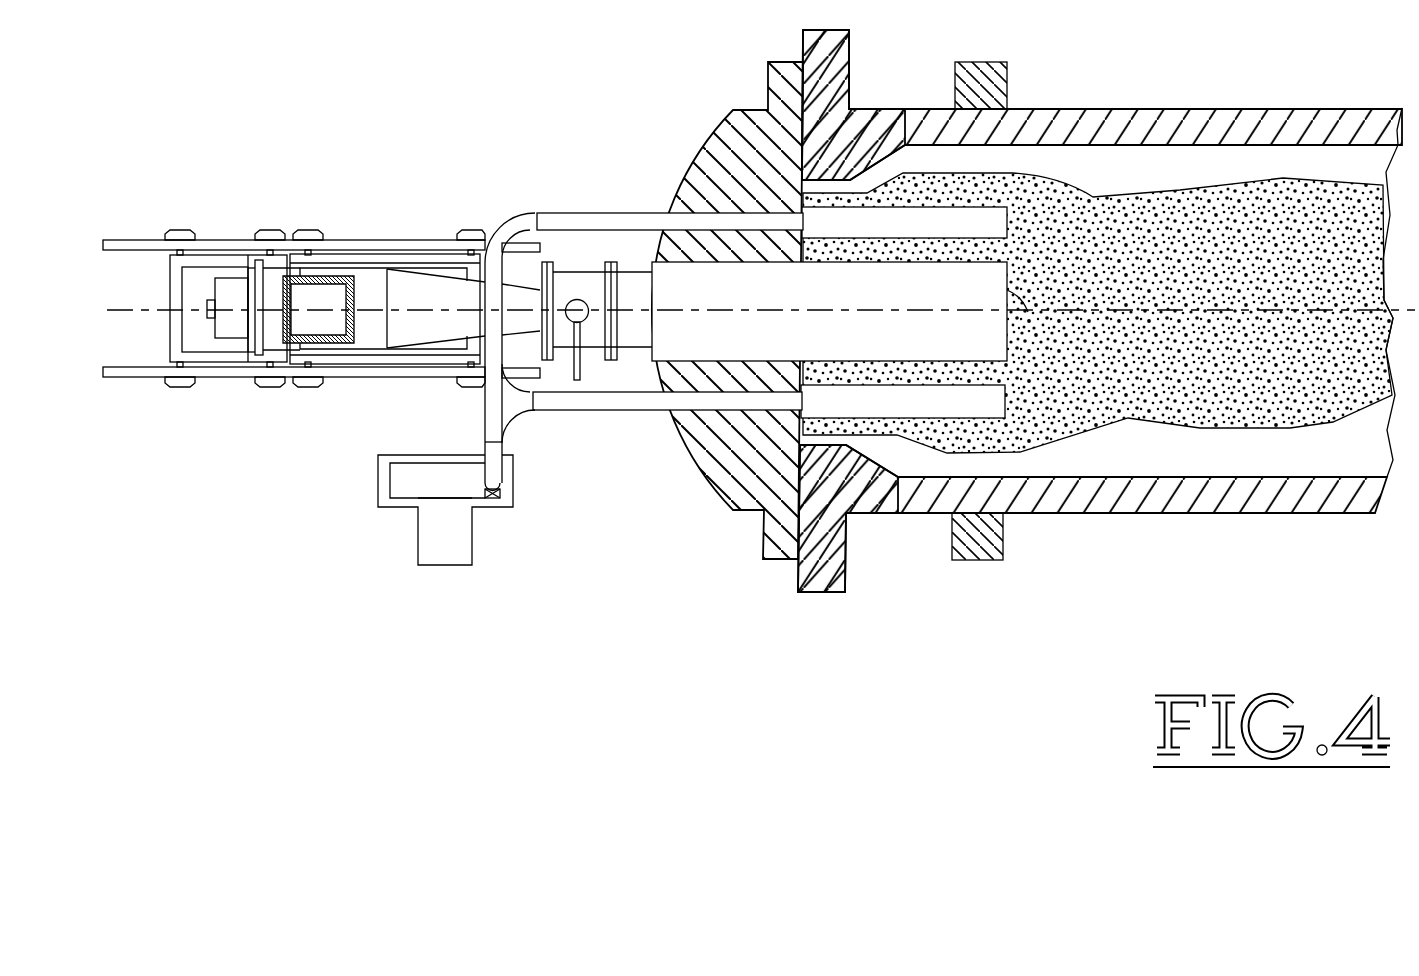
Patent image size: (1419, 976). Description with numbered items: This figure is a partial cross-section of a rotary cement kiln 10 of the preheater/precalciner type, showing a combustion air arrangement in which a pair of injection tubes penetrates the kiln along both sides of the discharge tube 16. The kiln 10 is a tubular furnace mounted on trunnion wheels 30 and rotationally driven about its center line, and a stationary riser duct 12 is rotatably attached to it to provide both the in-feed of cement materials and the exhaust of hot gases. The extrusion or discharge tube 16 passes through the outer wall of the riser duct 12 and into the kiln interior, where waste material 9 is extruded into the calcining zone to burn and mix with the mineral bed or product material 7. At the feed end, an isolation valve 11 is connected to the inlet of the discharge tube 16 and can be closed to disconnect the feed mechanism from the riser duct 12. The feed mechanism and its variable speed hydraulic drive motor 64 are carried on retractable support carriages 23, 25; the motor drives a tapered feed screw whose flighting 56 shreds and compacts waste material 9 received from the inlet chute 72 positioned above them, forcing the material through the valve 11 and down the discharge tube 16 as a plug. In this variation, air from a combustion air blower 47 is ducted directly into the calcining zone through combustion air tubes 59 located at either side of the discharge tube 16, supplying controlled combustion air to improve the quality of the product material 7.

The product material 7 is at (1217, 253).
The waste material 9 is at (1028, 313).
The kiln 10 is at (1320, 527).
The isolation valve 11 is at (585, 255).
The riser duct 12 is at (723, 124).
The discharge tube 16 is at (783, 298).
The support carriage 23 is at (378, 257).
The support carriage 25 is at (172, 337).
The trunnion wheels 30 is at (992, 62).
The combustion air blower 47 is at (473, 533).
The screw flighting 56 is at (418, 323).
The combustion air tubes 59 is at (977, 223).
The hydraulic drive motor 64 is at (214, 283).
The inlet chute 72 is at (355, 343).